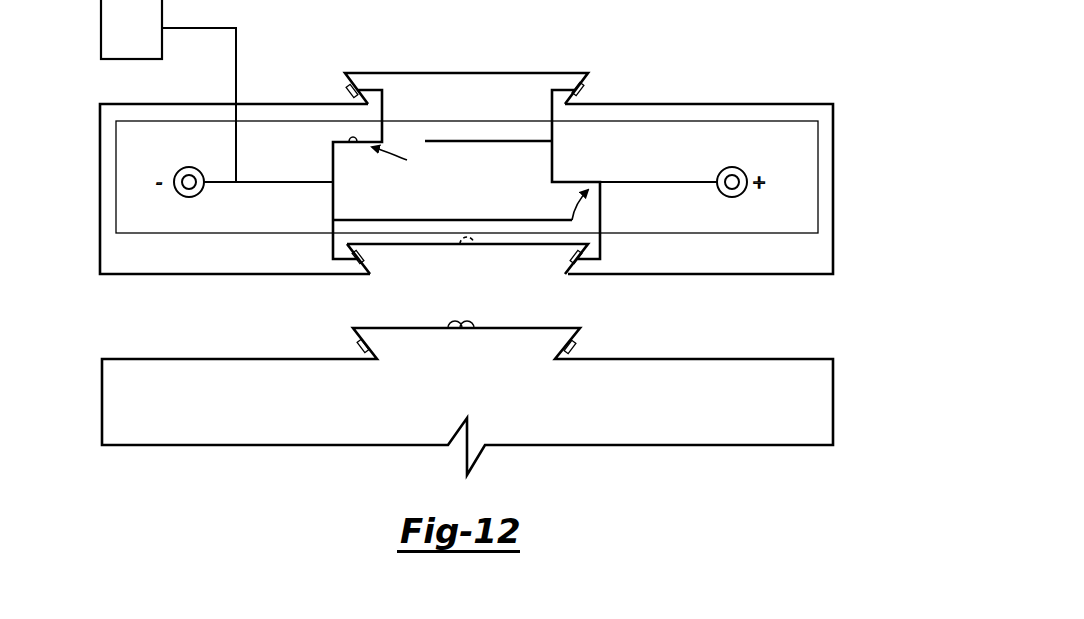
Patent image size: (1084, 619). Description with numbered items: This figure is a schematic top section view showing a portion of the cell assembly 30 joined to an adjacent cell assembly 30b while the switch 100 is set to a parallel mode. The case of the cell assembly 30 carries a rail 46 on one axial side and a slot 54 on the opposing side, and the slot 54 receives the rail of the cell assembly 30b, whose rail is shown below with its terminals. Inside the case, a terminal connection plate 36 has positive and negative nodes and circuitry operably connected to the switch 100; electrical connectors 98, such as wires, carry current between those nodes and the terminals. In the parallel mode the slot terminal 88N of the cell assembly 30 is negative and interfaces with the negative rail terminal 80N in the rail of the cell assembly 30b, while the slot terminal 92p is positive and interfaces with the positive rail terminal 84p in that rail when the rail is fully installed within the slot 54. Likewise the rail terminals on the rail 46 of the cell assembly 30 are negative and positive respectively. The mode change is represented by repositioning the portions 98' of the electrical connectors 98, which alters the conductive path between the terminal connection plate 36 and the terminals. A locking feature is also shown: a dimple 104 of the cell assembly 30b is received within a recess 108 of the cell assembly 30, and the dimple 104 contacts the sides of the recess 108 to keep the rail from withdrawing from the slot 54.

The cell assembly 30 is at (822, 112).
The cell assembly 30b is at (820, 398).
The terminal connection plate 36 is at (802, 216).
The rail 46 is at (480, 86).
The slot 54 is at (483, 284).
The negative rail terminal 80N is at (360, 347).
The positive rail terminal 84p is at (583, 90).
The slot terminal 88N is at (411, 270).
The slot terminal 92p is at (568, 256).
The electrical connectors 98 is at (526, 143).
The portions of the electrical connectors 98' is at (496, 198).
The switch 100 is at (146, 52).
The dimple 104 is at (443, 328).
The recess 108 is at (467, 249).